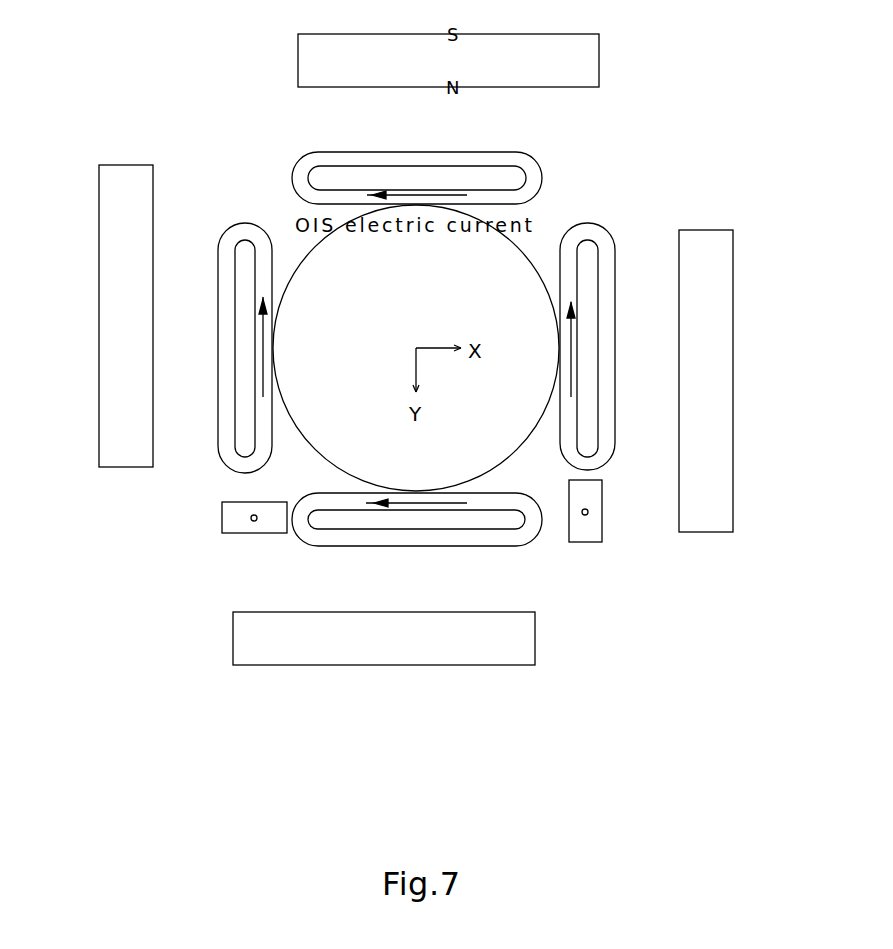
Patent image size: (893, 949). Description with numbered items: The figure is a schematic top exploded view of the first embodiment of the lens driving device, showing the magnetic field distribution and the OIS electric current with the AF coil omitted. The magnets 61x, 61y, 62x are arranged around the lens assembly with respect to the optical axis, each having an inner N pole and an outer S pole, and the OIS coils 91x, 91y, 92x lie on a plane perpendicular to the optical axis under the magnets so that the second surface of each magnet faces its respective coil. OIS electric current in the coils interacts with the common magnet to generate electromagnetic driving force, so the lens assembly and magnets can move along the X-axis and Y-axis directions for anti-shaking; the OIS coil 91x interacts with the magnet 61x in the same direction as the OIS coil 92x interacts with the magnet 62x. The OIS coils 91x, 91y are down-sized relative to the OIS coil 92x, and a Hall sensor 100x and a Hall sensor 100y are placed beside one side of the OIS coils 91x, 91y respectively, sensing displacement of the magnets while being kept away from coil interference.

The magnet 61x is at (715, 453).
The magnet 61y is at (480, 640).
The magnet 62x is at (117, 452).
The OIS coil 91x is at (599, 458).
The OIS coil 91y is at (493, 535).
The OIS coil 92x is at (235, 456).
The Hall sensor 100x is at (585, 532).
The Hall sensor 100y is at (250, 527).